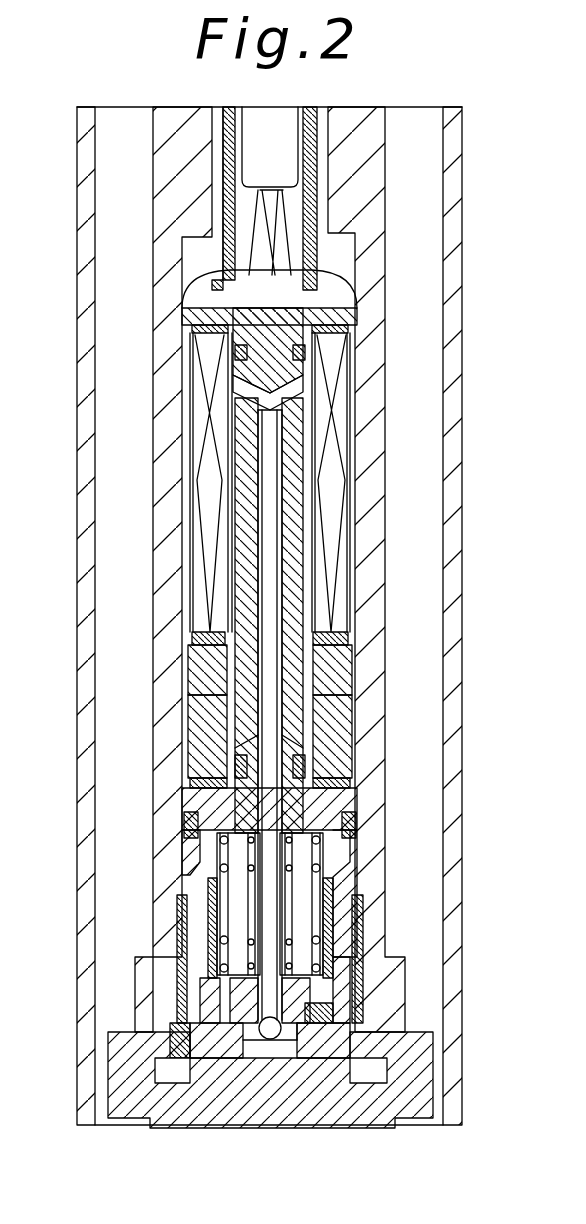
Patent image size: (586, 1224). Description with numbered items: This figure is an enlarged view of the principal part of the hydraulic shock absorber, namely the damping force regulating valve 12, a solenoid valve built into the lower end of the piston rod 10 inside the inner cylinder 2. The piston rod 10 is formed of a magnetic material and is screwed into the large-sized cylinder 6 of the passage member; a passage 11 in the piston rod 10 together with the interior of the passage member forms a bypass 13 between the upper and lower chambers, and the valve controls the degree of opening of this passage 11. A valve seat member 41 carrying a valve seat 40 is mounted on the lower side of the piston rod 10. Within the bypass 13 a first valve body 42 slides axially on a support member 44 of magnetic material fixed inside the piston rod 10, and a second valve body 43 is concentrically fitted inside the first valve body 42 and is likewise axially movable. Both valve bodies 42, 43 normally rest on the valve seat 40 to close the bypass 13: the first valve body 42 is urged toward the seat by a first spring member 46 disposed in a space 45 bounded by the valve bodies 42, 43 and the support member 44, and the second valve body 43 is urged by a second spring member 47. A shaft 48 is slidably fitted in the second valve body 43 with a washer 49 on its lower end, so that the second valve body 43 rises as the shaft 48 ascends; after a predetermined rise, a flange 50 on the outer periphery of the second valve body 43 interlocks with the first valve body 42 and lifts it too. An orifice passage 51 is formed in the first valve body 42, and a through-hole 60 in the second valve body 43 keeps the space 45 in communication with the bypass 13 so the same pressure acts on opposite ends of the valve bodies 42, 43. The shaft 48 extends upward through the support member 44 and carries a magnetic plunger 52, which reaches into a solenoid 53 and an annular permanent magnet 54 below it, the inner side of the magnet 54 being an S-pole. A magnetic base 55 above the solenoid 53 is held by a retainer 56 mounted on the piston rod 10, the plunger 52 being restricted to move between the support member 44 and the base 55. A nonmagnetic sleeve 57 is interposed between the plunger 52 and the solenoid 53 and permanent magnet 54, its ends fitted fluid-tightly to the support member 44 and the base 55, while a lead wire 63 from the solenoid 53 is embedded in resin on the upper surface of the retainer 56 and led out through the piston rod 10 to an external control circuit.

The inner cylinder 2 is at (455, 378).
The large-sized cylinder 6 is at (420, 1115).
The piston rod 10 is at (385, 213).
The passage 11 is at (365, 950).
The damping force regulating valve 12 is at (340, 885).
The bypass 13 is at (405, 1093).
The valve seat 40 is at (225, 1060).
The valve seat member 41 is at (215, 1060).
The first valve body 42 is at (330, 985).
The second valve body 43 is at (305, 1025).
The support member 44 is at (198, 800).
The space 45 is at (205, 863).
The first spring member 46 is at (215, 880).
The second spring member 47 is at (240, 958).
The shaft 48 is at (262, 700).
The washer 49 is at (262, 1040).
The flange 50 is at (320, 1020).
The orifice passage 51 is at (335, 1010).
The plunger 52 is at (245, 588).
The solenoid 53 is at (200, 476).
The permanent magnet 54 is at (200, 677).
The base 55 is at (230, 366).
The retainer 56 is at (186, 316).
The sleeve 57 is at (310, 500).
The through-hole 60 is at (283, 1022).
The lead wire 63 is at (300, 255).